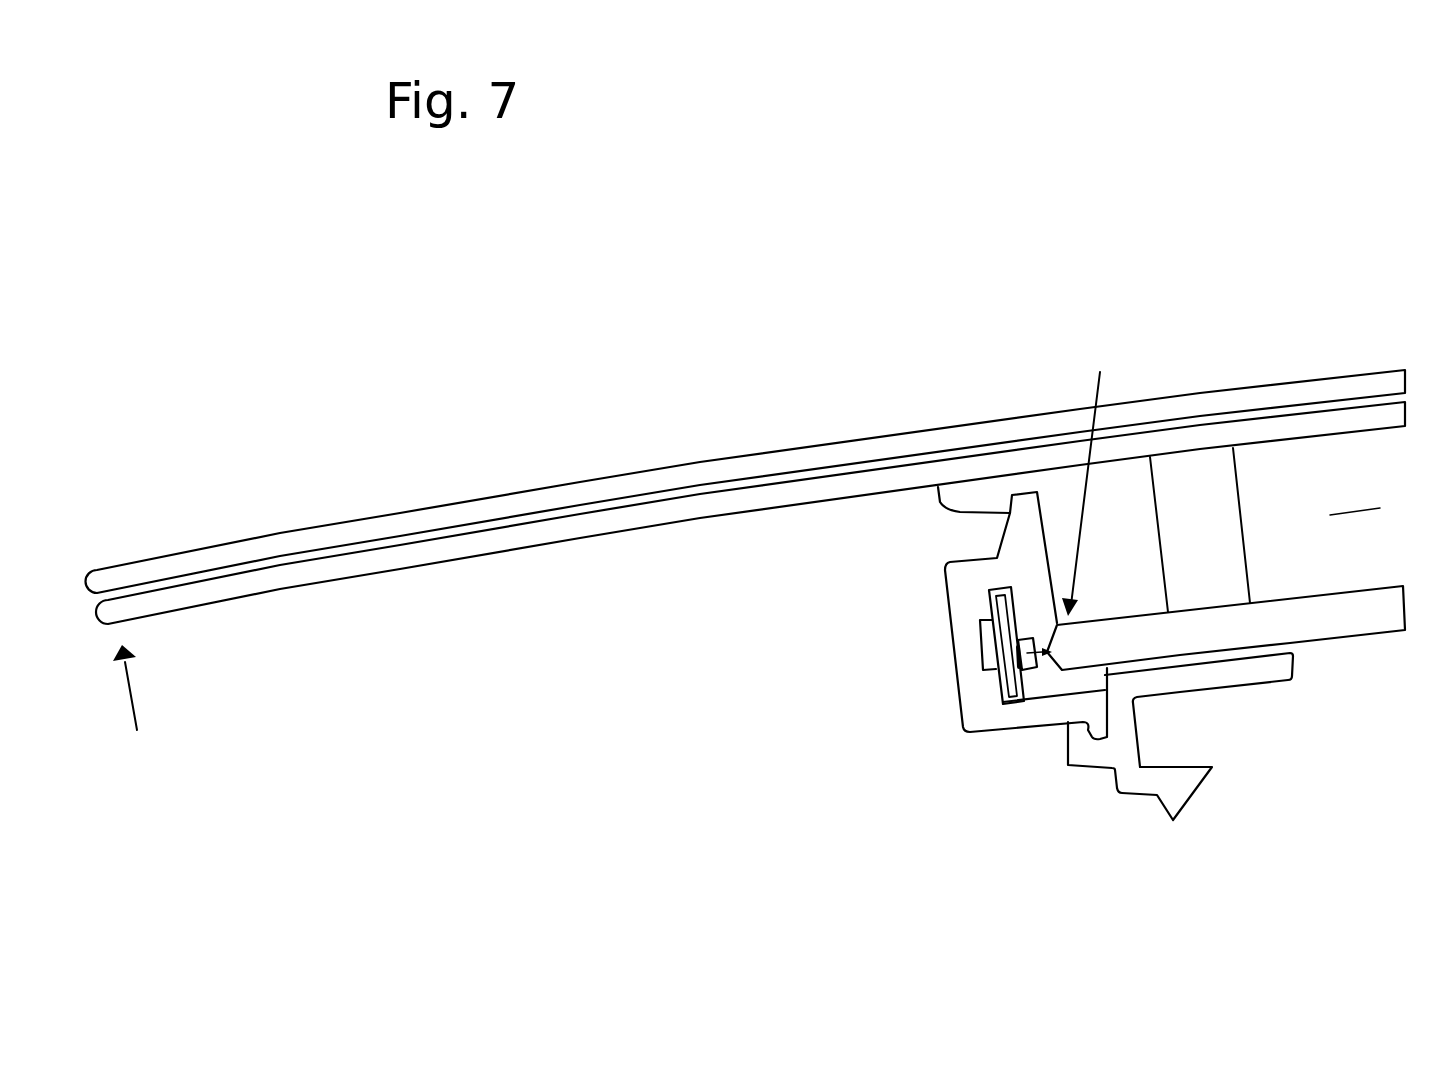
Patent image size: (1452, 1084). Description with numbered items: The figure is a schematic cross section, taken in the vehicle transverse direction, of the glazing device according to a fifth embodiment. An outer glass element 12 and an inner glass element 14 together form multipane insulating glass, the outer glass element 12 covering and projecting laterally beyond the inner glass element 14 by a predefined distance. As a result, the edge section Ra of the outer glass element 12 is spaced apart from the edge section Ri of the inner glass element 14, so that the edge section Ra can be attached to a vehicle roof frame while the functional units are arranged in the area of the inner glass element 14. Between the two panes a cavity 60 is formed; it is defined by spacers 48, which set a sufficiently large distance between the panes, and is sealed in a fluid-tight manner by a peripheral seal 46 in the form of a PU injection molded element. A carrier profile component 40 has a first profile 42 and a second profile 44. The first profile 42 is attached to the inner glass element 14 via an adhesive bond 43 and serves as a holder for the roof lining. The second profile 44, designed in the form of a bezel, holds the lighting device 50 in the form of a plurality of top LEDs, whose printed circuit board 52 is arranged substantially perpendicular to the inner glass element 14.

The outer glass element 12 is at (1337, 390).
The inner glass element 14 is at (1355, 618).
The carrier profile component 40 is at (1068, 713).
The first profile 42 is at (1187, 777).
The adhesive bond 43 is at (1267, 650).
The second profile 44 is at (963, 580).
The peripheral seal 46 is at (1116, 493).
The spacer 48 is at (1193, 485).
The lighting device 50 is at (1037, 660).
The printed circuit board 52 is at (1007, 627).
The cavity 60 is at (1330, 515).
The edge section of the inner glass element Ri is at (1084, 474).
The edge section of the outer glass element Ra is at (131, 722).